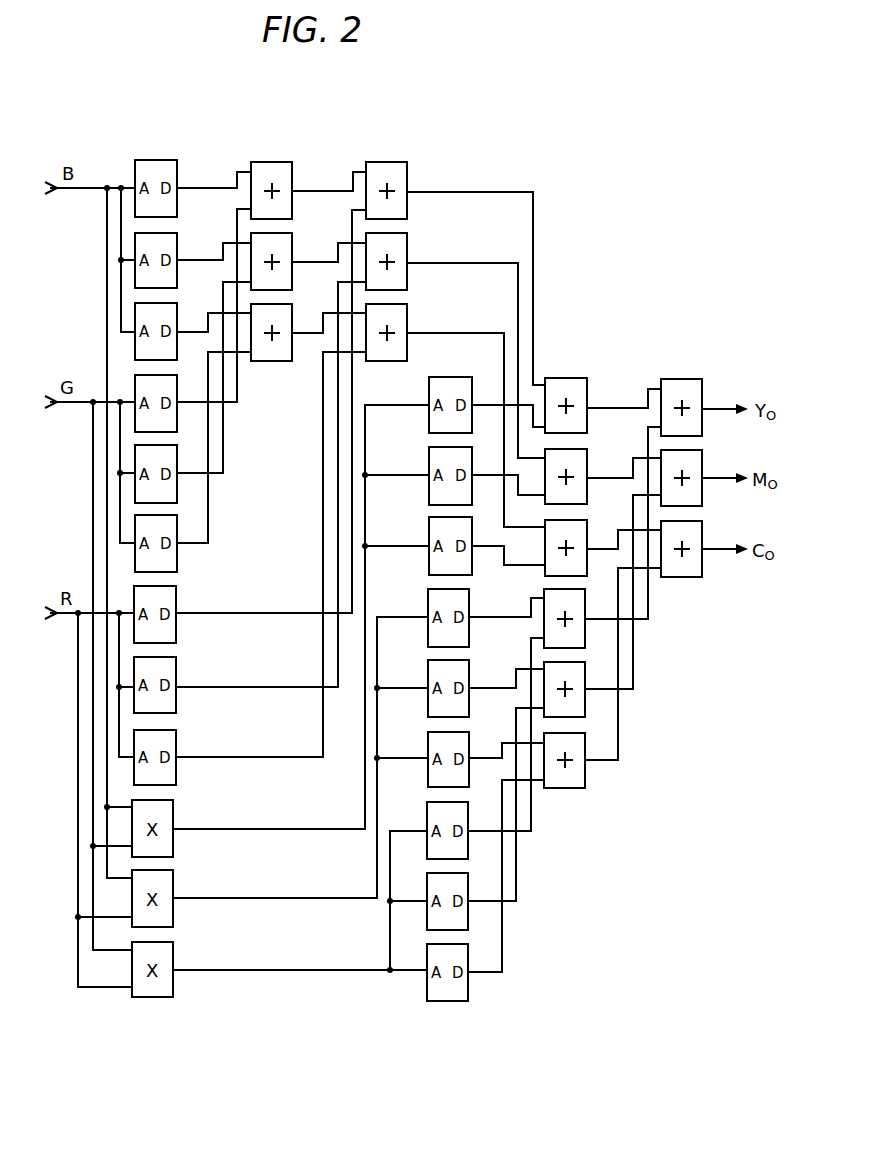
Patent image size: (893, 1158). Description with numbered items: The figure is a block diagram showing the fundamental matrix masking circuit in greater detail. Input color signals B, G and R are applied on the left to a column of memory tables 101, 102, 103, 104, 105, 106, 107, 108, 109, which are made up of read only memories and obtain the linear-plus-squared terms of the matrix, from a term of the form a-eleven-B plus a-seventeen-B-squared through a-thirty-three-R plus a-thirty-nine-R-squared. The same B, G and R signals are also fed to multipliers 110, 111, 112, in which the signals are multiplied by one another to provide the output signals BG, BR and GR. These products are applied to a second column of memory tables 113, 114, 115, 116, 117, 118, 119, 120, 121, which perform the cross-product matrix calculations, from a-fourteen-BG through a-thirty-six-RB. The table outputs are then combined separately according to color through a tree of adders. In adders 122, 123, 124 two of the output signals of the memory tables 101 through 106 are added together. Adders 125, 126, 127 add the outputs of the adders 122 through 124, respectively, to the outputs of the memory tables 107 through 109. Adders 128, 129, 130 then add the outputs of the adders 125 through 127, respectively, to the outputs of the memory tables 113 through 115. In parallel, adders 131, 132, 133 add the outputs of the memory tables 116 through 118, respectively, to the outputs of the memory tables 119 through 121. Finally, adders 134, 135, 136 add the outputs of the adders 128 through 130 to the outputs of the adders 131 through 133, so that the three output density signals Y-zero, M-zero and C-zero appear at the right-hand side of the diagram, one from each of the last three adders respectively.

The memory table 101 is at (178, 170).
The memory table 102 is at (178, 242).
The memory table 103 is at (178, 314).
The memory table 104 is at (177, 420).
The memory table 105 is at (177, 488).
The memory table 106 is at (177, 558).
The memory table 107 is at (176, 628).
The memory table 108 is at (176, 700).
The memory table 109 is at (176, 770).
The multiplier 110 is at (173, 842).
The multiplier 111 is at (173, 911).
The multiplier 112 is at (173, 985).
The memory table 113 is at (429, 412).
The memory table 114 is at (429, 483).
The memory table 115 is at (429, 553).
The memory table 116 is at (428, 626).
The memory table 117 is at (428, 697).
The memory table 118 is at (428, 768).
The memory table 119 is at (468, 847).
The memory table 120 is at (468, 916).
The memory table 121 is at (468, 988).
The adder 122 is at (293, 168).
The adder 123 is at (293, 240).
The adder 124 is at (266, 362).
The adder 125 is at (408, 170).
The adder 126 is at (408, 242).
The adder 127 is at (408, 312).
The adder 128 is at (587, 384).
The adder 129 is at (587, 462).
The adder 130 is at (587, 532).
The adder 131 is at (585, 635).
The adder 132 is at (585, 705).
The adder 133 is at (585, 776).
The adder 134 is at (702, 385).
The adder 135 is at (702, 462).
The adder 136 is at (702, 532).